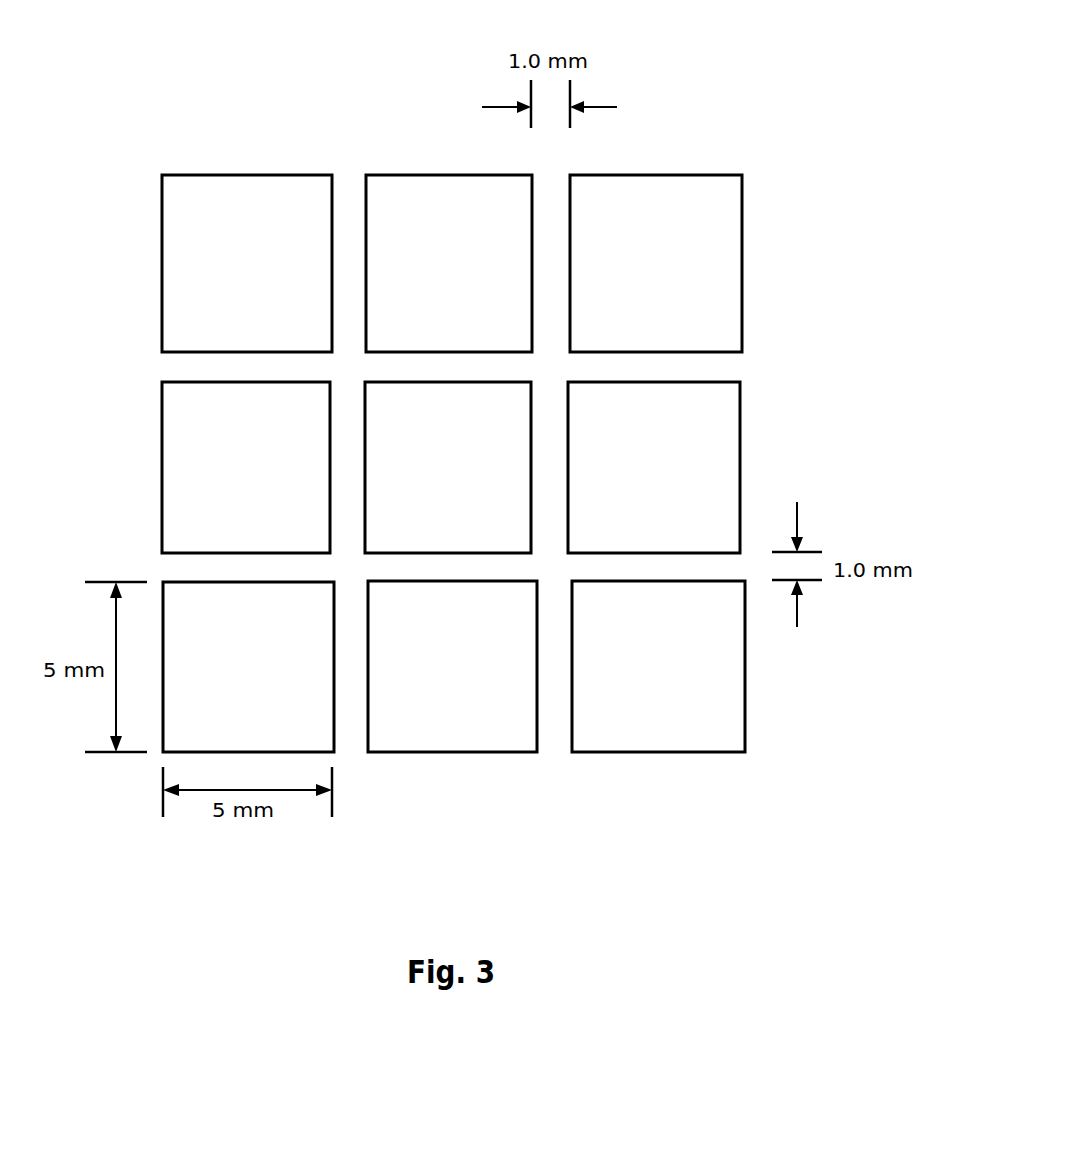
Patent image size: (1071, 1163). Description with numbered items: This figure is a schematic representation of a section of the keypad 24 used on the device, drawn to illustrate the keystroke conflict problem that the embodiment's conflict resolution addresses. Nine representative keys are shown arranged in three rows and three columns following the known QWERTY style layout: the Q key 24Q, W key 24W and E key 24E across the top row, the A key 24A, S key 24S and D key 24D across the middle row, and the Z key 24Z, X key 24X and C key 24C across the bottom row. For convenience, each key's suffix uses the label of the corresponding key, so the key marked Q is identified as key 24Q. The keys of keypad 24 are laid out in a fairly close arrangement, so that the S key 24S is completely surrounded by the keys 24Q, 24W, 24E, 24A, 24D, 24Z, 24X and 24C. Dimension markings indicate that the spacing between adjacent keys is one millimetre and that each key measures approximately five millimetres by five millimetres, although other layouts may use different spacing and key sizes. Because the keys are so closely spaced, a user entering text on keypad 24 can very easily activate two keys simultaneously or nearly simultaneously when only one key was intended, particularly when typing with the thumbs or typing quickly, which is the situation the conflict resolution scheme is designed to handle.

The keypad 24 is at (692, 143).
The Q key 24Q is at (247, 264).
The W key 24W is at (449, 264).
The E key 24E is at (656, 264).
The A key 24A is at (246, 468).
The S key 24S is at (448, 468).
The D key 24D is at (654, 468).
The Z key 24Z is at (248, 667).
The X key 24X is at (452, 667).
The C key 24C is at (658, 667).